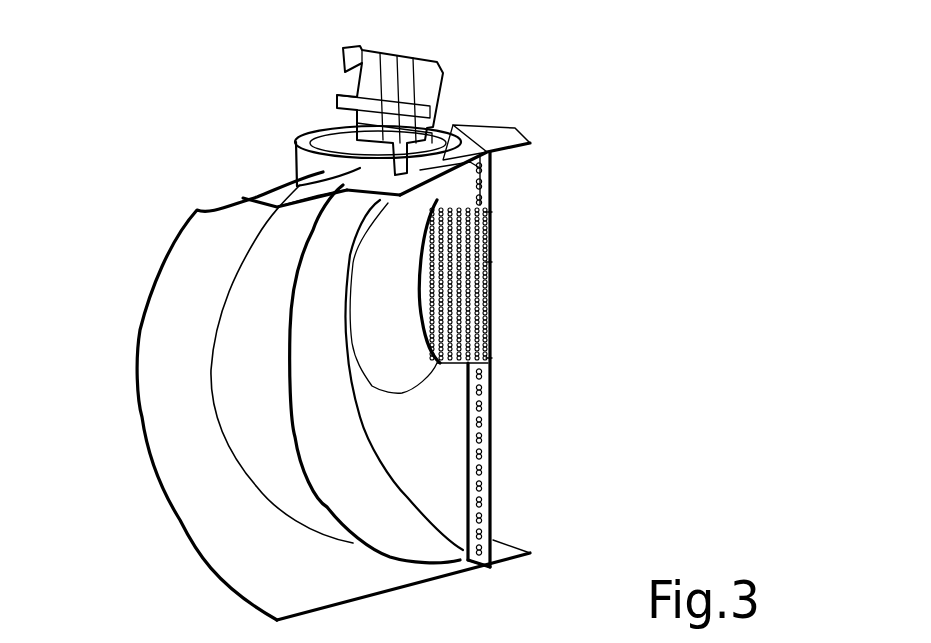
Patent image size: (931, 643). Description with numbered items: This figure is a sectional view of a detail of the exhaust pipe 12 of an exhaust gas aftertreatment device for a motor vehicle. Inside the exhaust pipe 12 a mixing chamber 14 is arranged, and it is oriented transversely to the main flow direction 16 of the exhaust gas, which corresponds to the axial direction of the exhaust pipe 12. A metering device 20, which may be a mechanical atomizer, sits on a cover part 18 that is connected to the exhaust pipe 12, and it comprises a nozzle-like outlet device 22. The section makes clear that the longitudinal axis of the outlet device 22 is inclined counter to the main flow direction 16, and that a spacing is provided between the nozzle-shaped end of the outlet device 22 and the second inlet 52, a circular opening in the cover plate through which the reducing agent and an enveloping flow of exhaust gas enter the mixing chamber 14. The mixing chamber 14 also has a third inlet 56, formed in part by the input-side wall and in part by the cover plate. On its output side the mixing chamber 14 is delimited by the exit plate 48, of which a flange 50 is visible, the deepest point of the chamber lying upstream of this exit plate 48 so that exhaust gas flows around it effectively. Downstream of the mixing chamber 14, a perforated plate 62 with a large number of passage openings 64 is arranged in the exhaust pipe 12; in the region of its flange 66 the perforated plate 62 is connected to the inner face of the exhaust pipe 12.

The exhaust pipe 12 is at (222, 565).
The mixing chamber 14 is at (230, 243).
The main flow direction 16 is at (133, 440).
The cover part 18 is at (312, 150).
The metering device 20 is at (460, 75).
The outlet device 22 is at (453, 125).
The exit plate 48 is at (463, 423).
The flange 50 is at (483, 573).
The second inlet 52 is at (490, 149).
The third inlet 56 is at (293, 178).
The perforated plate 62 is at (490, 297).
The passage openings 64 is at (490, 218).
The flange 66 is at (497, 550).